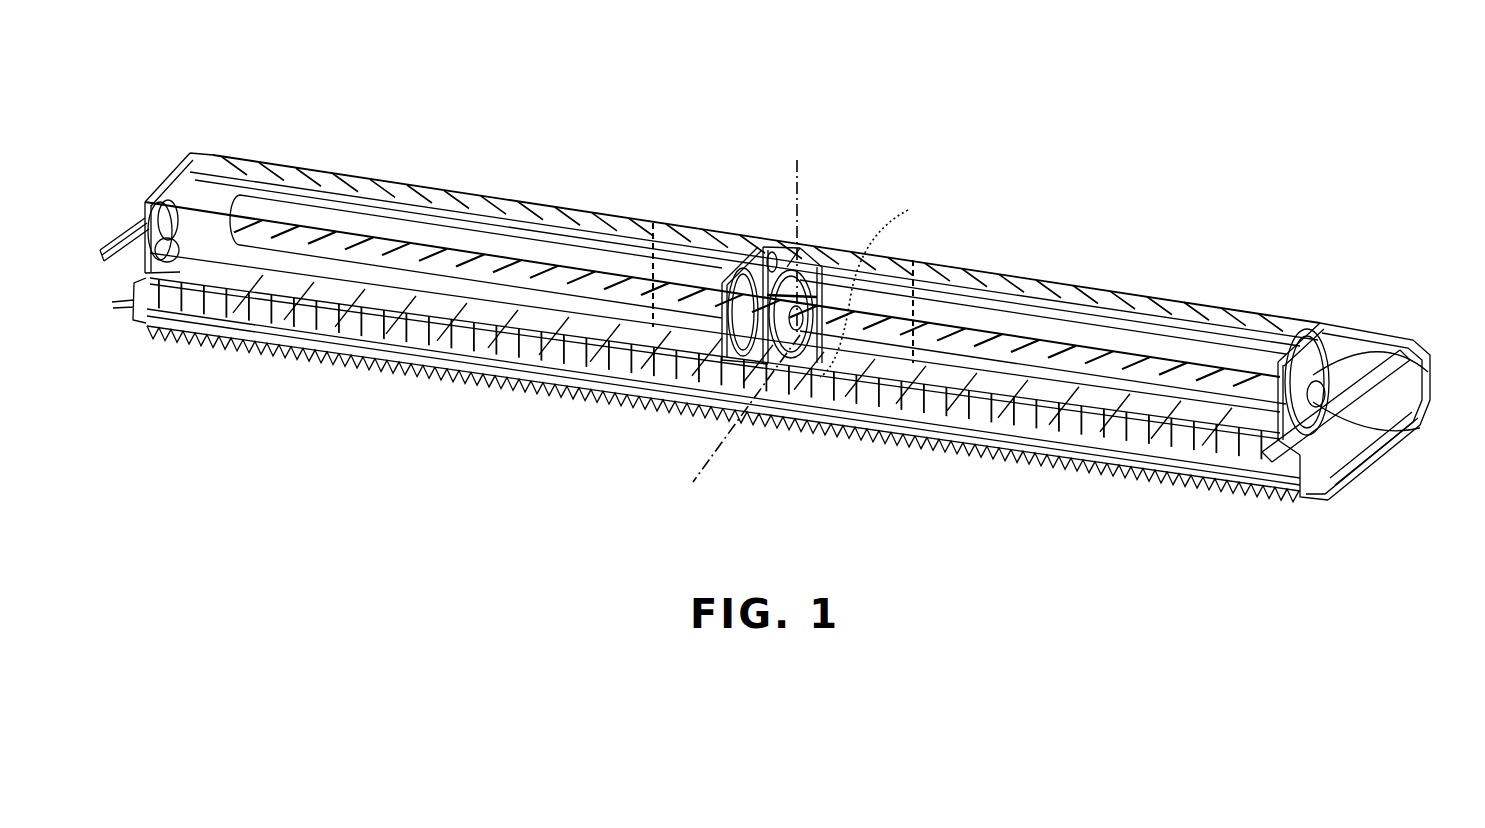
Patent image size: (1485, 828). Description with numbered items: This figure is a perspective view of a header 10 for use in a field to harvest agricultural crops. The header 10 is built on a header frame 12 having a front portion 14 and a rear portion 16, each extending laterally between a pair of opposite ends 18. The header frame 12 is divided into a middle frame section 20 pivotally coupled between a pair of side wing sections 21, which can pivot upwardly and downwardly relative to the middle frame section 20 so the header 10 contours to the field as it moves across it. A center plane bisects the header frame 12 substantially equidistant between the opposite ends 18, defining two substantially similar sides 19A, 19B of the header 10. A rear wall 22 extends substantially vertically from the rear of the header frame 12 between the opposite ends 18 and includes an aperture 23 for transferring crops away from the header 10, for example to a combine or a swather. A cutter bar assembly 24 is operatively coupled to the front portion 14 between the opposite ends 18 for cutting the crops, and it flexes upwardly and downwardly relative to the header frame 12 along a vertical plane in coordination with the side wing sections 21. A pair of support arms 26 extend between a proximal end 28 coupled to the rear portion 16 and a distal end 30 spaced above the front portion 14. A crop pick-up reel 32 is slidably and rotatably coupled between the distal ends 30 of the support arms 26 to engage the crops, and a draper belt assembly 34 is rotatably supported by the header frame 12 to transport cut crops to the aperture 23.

The header 10 is at (1179, 186).
The header frame 12 is at (1197, 272).
The front portion 14 is at (1300, 506).
The rear portion 16 is at (1433, 342).
The opposite ends 18 is at (132, 306).
The side 19A is at (573, 419).
The side 19B is at (900, 471).
The middle frame section 20 is at (815, 222).
The side wing sections 21 is at (476, 184).
The rear wall 22 is at (1363, 342).
The aperture 23 is at (878, 285).
The cutter bar assembly 24 is at (1166, 502).
The support arms 26 is at (1356, 400).
The proximal end 28 is at (1412, 358).
The distal end 30 is at (1315, 437).
The crop pick-up reel 32 is at (1324, 334).
The draper belt assembly 34 is at (772, 434).